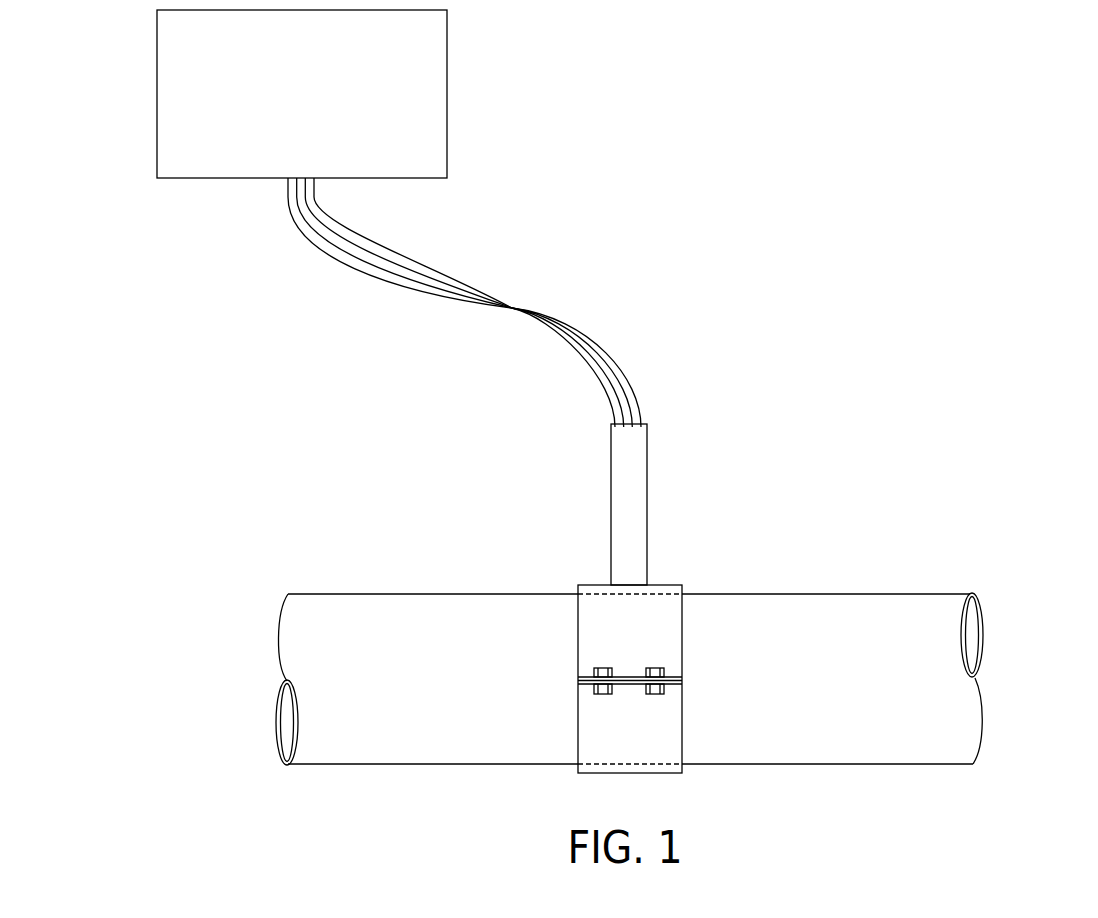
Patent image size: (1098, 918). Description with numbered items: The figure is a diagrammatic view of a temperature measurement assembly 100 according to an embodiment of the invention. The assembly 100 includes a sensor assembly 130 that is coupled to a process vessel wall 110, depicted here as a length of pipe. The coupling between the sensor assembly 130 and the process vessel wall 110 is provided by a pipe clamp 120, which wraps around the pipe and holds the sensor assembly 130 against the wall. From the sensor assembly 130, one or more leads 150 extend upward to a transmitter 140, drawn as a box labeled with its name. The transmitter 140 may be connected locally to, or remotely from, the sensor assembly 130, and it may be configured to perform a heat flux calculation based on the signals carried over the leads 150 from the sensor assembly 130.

The temperature measurement assembly 100 is at (962, 130).
The process vessel wall 110 is at (770, 628).
The pipe clamp 120 is at (655, 608).
The sensor assembly 130 is at (647, 460).
The transmitter 140 is at (447, 137).
The leads 150 is at (453, 265).